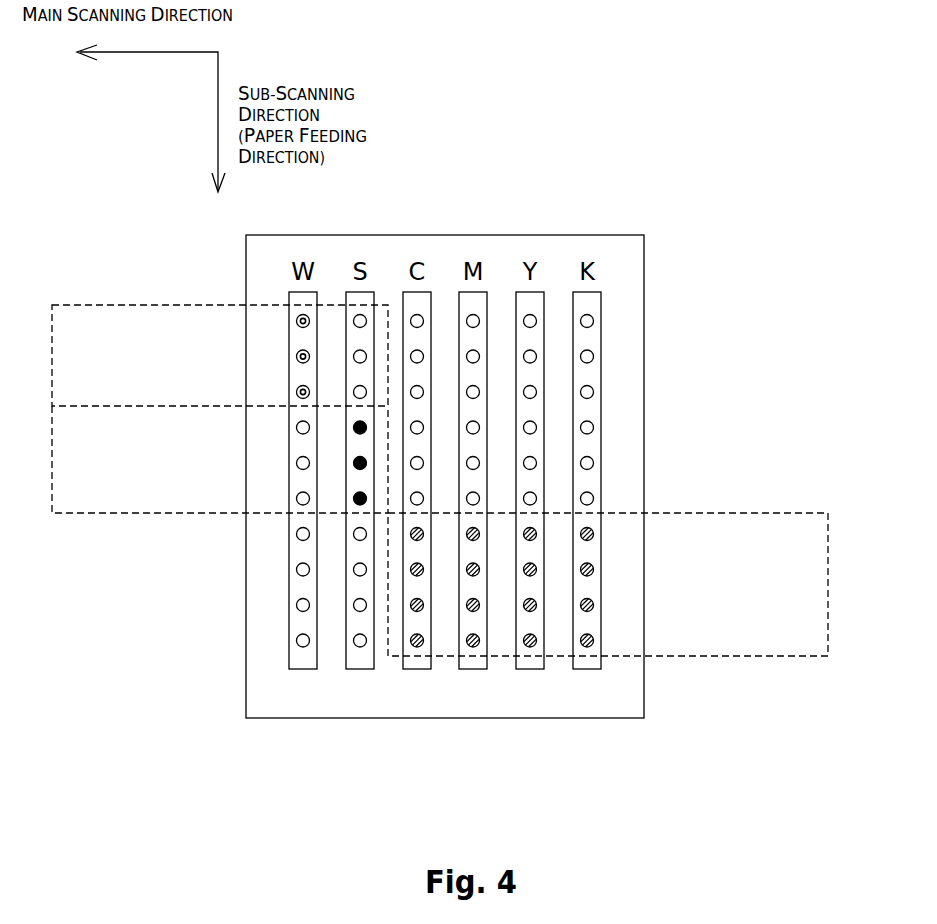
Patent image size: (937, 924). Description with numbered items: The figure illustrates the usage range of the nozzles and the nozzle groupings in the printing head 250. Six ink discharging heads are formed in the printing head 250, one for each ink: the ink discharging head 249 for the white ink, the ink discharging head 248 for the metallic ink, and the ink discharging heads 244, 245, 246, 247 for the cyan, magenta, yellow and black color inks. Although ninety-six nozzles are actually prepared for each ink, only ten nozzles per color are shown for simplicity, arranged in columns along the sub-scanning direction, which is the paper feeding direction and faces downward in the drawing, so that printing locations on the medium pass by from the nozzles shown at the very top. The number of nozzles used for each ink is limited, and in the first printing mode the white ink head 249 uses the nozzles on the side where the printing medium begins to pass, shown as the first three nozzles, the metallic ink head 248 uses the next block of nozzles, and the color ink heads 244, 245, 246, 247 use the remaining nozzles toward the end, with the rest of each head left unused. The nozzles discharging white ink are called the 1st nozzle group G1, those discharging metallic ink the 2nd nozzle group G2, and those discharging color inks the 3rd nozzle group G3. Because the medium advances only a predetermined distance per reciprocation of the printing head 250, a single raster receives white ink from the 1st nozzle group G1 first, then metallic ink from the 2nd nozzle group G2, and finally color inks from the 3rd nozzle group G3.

The printing head 250 is at (559, 233).
The ink discharging head for the white ink 249 is at (303, 669).
The ink discharging head for the metallic ink 248 is at (360, 669).
The ink discharging head for the cyan ink 244 is at (417, 669).
The ink discharging head for the magenta ink 245 is at (473, 669).
The ink discharging head for the yellow ink 246 is at (530, 669).
The ink discharging head for the black ink 247 is at (587, 669).
The 1st nozzle group G1 is at (78, 300).
The 2nd nozzle group G2 is at (80, 518).
The 3rd nozzle group G3 is at (803, 660).